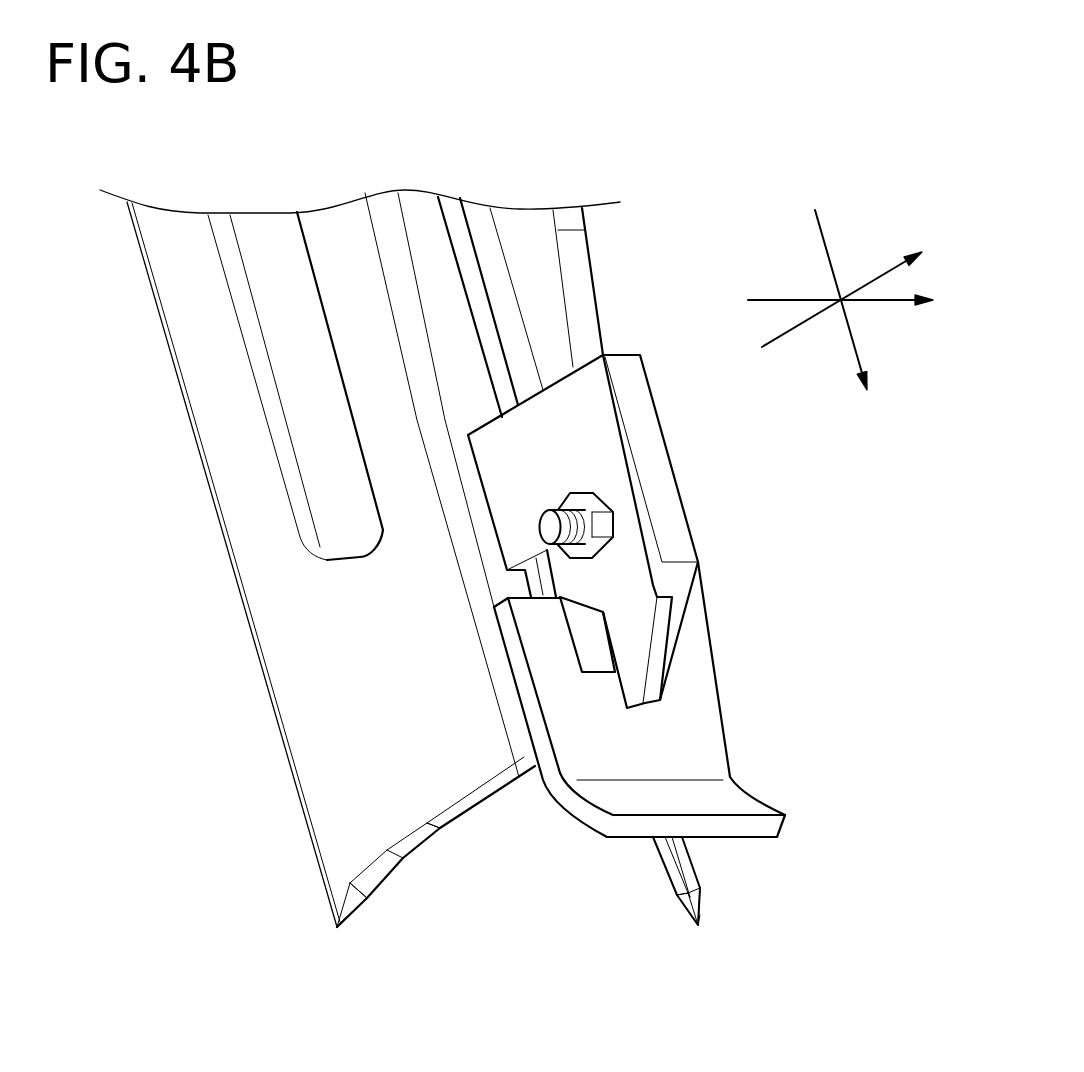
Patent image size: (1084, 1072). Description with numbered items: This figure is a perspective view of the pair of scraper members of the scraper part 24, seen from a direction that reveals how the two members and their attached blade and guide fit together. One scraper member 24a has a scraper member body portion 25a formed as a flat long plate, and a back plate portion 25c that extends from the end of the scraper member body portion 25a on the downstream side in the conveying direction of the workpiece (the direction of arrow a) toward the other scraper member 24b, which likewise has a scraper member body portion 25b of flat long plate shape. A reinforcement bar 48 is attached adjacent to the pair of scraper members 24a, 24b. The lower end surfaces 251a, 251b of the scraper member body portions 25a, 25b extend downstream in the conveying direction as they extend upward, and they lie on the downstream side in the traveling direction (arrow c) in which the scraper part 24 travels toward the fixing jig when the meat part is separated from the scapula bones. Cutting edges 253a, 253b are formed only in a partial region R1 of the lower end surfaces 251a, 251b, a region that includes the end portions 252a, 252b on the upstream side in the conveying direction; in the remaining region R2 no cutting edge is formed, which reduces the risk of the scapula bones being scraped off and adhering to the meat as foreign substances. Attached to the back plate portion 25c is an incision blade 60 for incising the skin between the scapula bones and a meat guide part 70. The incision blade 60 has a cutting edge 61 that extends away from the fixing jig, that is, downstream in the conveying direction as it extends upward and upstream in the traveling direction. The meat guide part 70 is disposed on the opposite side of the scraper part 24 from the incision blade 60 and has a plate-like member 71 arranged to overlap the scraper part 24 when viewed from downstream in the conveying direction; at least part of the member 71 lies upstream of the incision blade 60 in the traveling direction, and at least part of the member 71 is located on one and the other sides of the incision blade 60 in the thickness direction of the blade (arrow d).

The scraper part 24 is at (405, 578).
The scraper member 24a is at (212, 543).
The scraper member 24b is at (618, 290).
The scraper member body portion 25a is at (307, 707).
The scraper member body portion 25b is at (482, 222).
The back plate portion 25c is at (418, 222).
The reinforcement bar 48 is at (287, 233).
The incision blade 60 is at (580, 627).
The cutting edge 61 is at (580, 647).
The meat guide part 70 is at (658, 789).
The plate-like member 71 is at (680, 712).
The lower end surface 251a is at (468, 815).
The end portion 252a is at (337, 930).
The cutting edge 253a is at (352, 913).
The lower end surface 251b is at (657, 850).
The end portion 252b is at (698, 927).
The cutting edge 253b is at (694, 912).
The partial region R1 is at (348, 899).
The region R2 is at (437, 825).
The conveying direction of the workpiece a is at (878, 278).
The traveling direction c is at (858, 345).
The thickness direction of the incision blade d is at (898, 297).